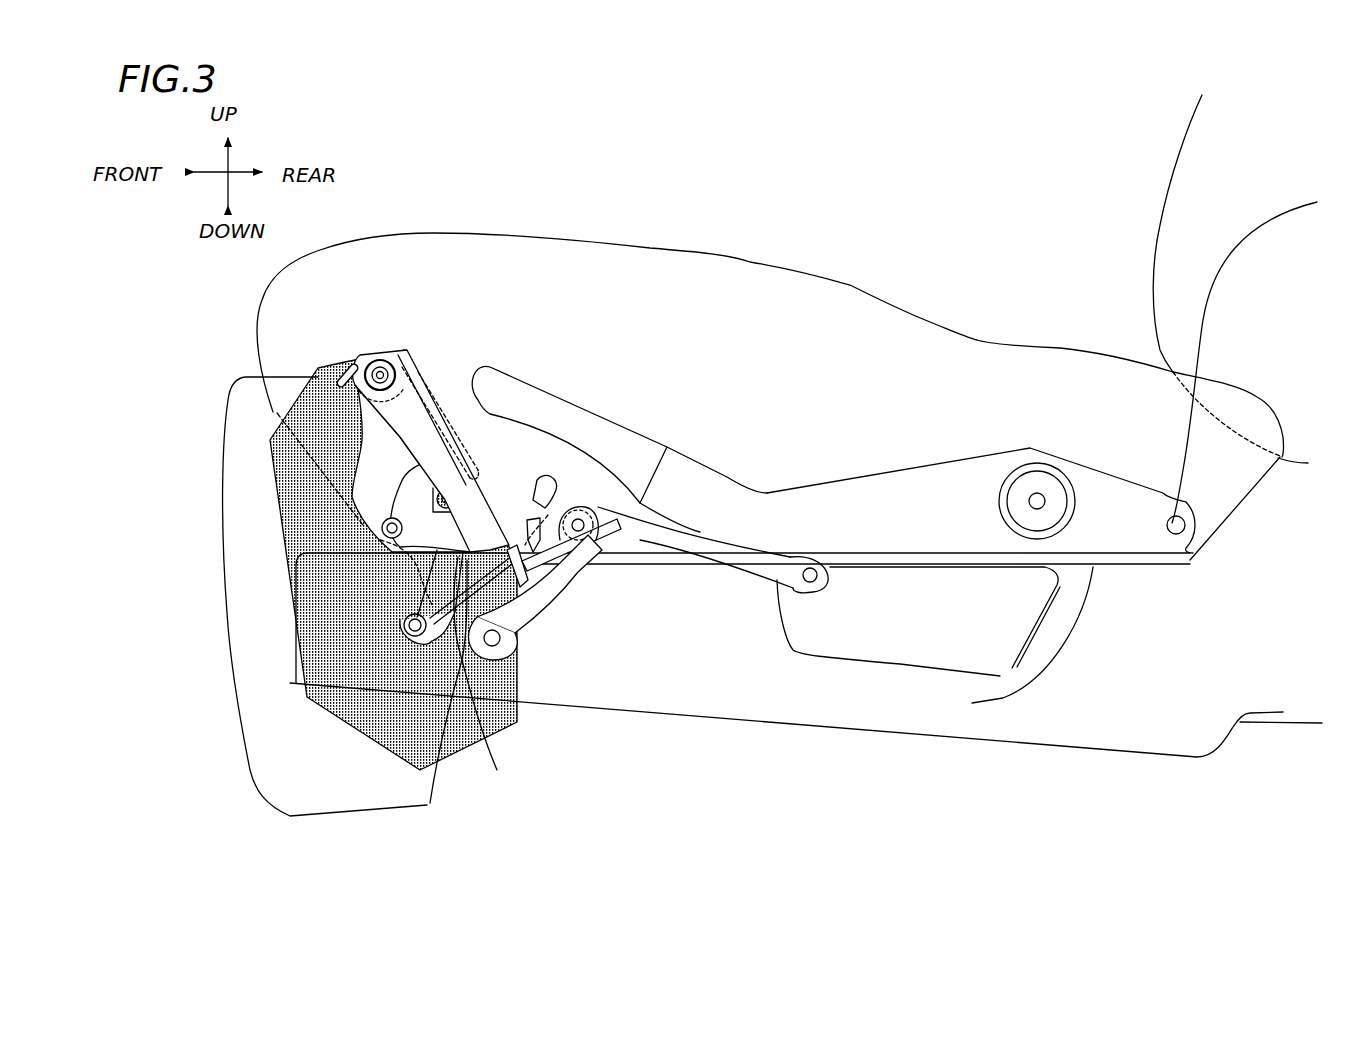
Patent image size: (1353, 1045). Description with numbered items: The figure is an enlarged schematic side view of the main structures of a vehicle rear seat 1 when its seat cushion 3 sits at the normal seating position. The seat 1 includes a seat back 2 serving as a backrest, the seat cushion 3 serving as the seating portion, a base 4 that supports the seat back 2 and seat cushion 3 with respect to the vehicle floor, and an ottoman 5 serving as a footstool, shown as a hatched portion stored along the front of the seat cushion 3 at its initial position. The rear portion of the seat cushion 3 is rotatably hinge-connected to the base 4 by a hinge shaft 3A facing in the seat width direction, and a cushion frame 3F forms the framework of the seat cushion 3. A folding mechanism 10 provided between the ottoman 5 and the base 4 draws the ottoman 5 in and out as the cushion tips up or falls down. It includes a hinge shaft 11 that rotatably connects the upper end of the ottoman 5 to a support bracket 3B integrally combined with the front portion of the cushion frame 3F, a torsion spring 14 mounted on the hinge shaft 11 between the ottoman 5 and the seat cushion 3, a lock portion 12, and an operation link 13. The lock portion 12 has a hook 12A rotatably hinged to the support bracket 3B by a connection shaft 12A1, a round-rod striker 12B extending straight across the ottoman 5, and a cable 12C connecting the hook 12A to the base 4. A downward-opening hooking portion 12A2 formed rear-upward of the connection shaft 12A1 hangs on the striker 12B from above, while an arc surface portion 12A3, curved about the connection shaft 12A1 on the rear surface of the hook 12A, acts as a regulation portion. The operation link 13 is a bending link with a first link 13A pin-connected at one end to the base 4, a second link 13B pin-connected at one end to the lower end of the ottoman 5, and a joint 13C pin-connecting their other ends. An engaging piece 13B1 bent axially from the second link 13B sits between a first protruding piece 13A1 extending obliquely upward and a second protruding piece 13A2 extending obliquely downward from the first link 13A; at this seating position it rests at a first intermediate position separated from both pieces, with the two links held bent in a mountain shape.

The seat 1 is at (960, 156).
The seat back 2 is at (1180, 187).
The seat cushion 3 is at (740, 265).
The hinge shaft 3A is at (1038, 500).
The support bracket 3B is at (408, 415).
The cushion frame 3F is at (613, 447).
The base 4 is at (851, 722).
The ottoman 5 is at (353, 703).
The folding mechanism 10 is at (556, 660).
The hinge shaft 11 is at (381, 368).
The lock portion 12 is at (403, 478).
The hook 12A is at (408, 507).
The connection shaft 12A1 is at (382, 522).
The hooking portion 12A2 is at (468, 490).
The arc surface portion 12A3 is at (457, 567).
The striker 12B is at (443, 405).
The cable 12C is at (488, 758).
The operation link 13 is at (742, 570).
The first link 13A is at (693, 547).
The first protruding piece 13A1 is at (538, 430).
The second protruding piece 13A2 is at (550, 570).
The second link 13B is at (520, 603).
The engaging piece 13B1 is at (555, 515).
The joint 13C is at (580, 527).
The torsion spring 14 is at (351, 368).